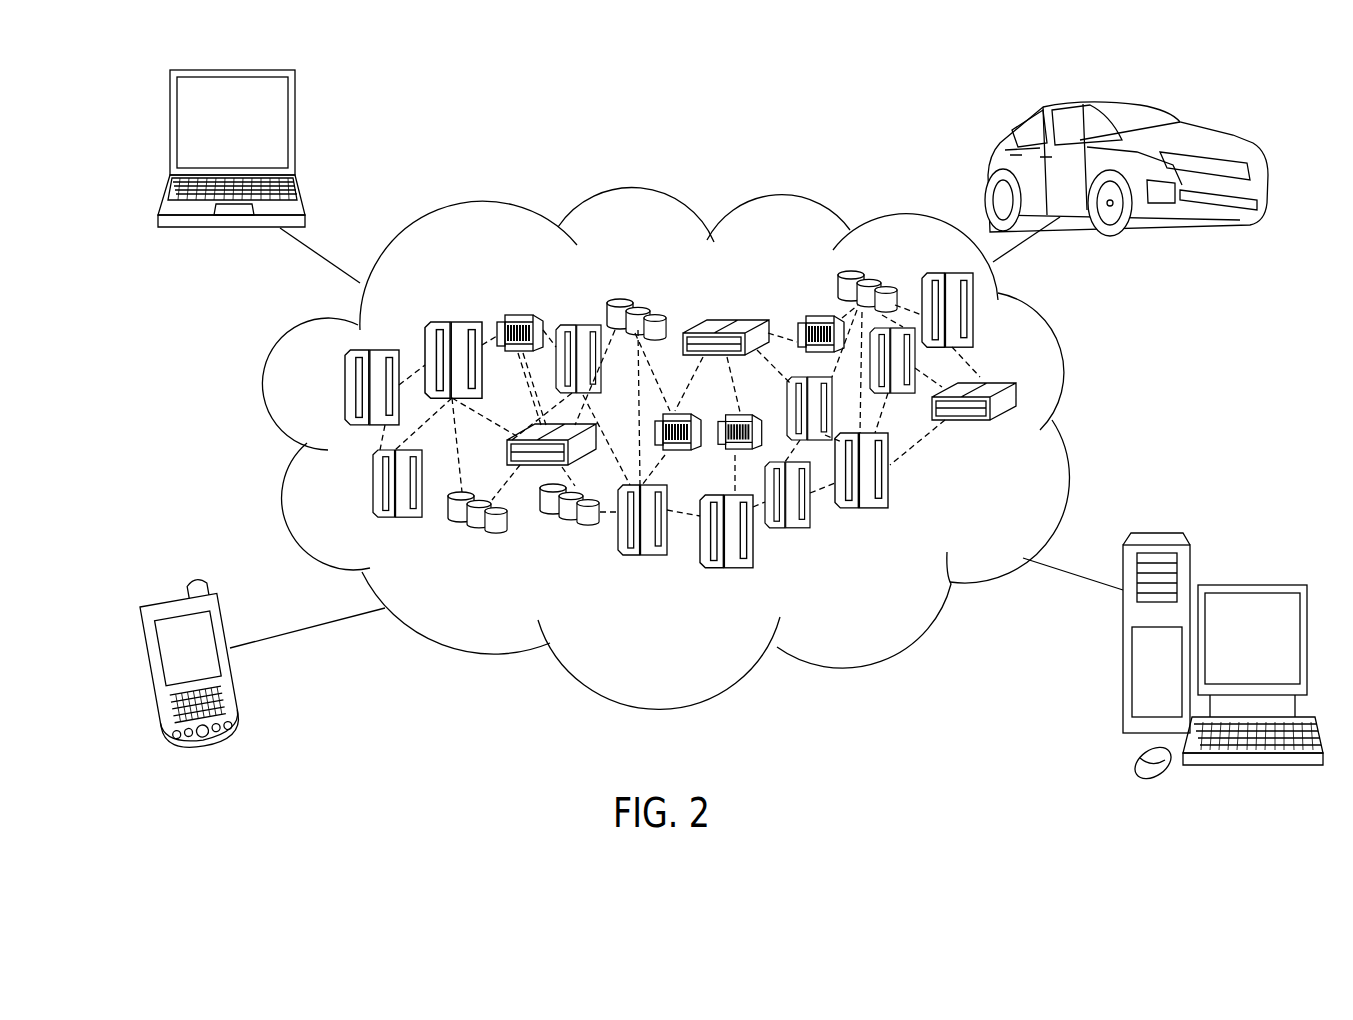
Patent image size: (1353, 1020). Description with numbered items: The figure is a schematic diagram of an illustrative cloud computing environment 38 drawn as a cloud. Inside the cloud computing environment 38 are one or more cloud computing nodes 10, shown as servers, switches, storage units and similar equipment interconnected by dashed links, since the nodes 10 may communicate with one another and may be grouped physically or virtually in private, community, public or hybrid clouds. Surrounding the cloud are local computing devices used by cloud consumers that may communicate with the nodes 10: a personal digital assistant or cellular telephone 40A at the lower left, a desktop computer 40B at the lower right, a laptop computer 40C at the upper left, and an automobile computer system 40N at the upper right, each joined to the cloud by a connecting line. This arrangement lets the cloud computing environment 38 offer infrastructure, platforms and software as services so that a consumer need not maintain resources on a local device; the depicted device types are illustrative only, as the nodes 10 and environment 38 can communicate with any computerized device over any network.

The cloud computing nodes 10 is at (1040, 446).
The cloud computing environment 38 is at (1062, 358).
The personal digital assistant (PDA) or cellular telephone 40A is at (148, 675).
The desktop computer 40B is at (1245, 584).
The laptop computer 40C is at (169, 128).
The automobile computer system 40N is at (1181, 122).